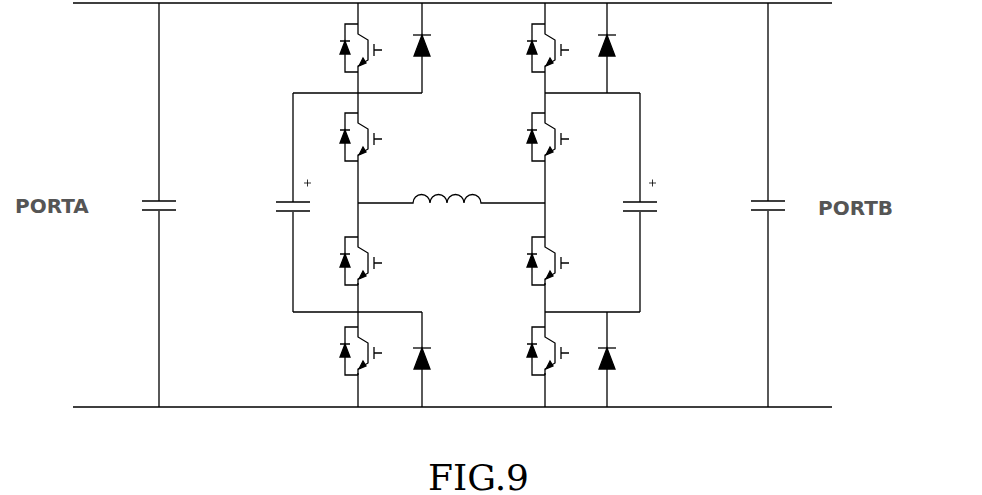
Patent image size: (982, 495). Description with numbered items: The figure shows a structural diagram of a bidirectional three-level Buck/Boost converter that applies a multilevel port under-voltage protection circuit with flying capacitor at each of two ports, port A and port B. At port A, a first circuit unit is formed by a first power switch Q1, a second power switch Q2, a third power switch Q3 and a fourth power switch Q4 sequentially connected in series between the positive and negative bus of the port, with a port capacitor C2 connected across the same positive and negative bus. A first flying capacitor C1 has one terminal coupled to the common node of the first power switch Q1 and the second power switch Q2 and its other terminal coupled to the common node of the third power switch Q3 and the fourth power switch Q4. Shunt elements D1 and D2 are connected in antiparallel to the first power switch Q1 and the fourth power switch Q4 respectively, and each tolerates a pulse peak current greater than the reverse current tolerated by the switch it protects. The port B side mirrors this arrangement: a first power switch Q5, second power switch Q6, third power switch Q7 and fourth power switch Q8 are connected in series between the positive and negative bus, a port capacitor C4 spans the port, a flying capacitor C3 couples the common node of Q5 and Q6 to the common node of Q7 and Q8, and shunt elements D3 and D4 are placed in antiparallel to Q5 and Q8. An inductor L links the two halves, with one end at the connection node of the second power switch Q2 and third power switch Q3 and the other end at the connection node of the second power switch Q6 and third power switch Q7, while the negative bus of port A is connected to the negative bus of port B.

The first power switch Q1 is at (371, 54).
The second power switch Q2 is at (374, 144).
The third power switch Q3 is at (374, 270).
The fourth power switch Q4 is at (371, 360).
The first power switch Q5 is at (558, 54).
The second power switch Q6 is at (561, 144).
The third power switch Q7 is at (561, 270).
The fourth power switch Q8 is at (558, 360).
The shunt element D1 is at (442, 48).
The shunt element D2 is at (442, 359).
The shunt element D3 is at (627, 48).
The shunt element D4 is at (627, 359).
The first flying capacitor C1 is at (281, 202).
The port capacitor C2 is at (145, 205).
The first flying capacitor C3 is at (630, 202).
The port capacitor C4 is at (753, 205).
The inductor L is at (451, 216).